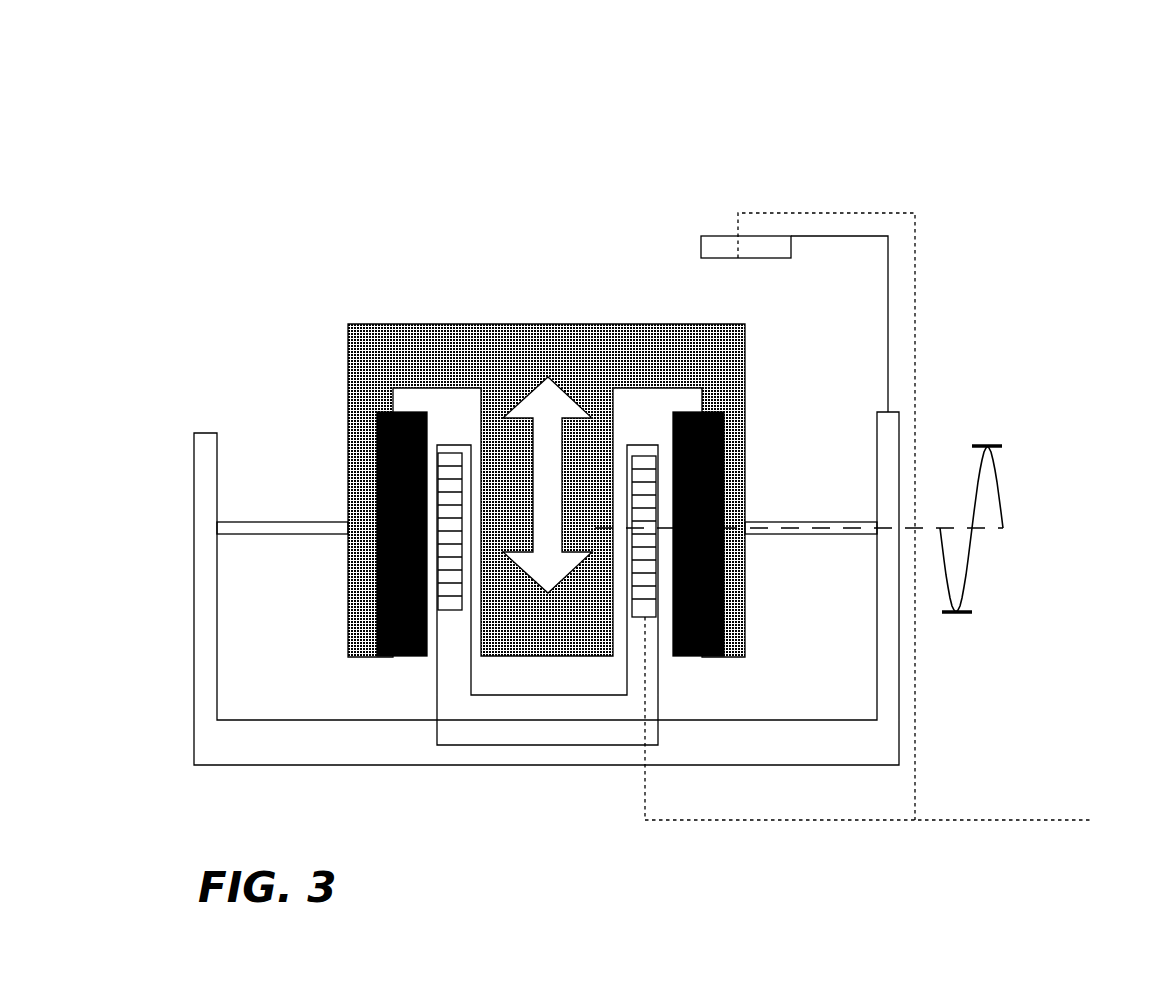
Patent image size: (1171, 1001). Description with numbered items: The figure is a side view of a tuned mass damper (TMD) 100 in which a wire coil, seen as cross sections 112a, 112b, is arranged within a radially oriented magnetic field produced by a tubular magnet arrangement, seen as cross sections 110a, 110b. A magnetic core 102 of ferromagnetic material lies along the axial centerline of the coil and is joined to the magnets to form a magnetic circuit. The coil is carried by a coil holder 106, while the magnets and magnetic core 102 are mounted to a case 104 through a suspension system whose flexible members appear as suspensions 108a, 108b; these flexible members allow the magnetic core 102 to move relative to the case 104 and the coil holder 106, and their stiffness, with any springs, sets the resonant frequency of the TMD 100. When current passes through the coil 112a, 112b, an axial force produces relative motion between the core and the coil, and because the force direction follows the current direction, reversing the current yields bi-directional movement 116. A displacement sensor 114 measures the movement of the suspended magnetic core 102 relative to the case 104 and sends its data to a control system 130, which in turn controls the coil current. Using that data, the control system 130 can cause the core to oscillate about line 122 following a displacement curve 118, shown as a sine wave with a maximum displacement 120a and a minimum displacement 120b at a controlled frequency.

The tuned mass damper (TMD) 100 is at (328, 170).
The magnetic core 102 is at (546, 490).
The case 104 is at (546, 588).
The coil holder 106 is at (547, 595).
The suspension 108a is at (308, 520).
The suspension 108b is at (782, 522).
The magnet 110a is at (410, 656).
The magnet 110b is at (700, 657).
The coil 112a is at (452, 455).
The coil 112b is at (650, 462).
The displacement sensor 114 is at (700, 246).
The bi-directional movement 116 is at (548, 385).
The displacement curve 118 is at (970, 555).
The maximum displacement 120a is at (985, 447).
The minimum displacement 120b is at (965, 617).
The line 122 is at (997, 532).
The control system 130 is at (902, 570).